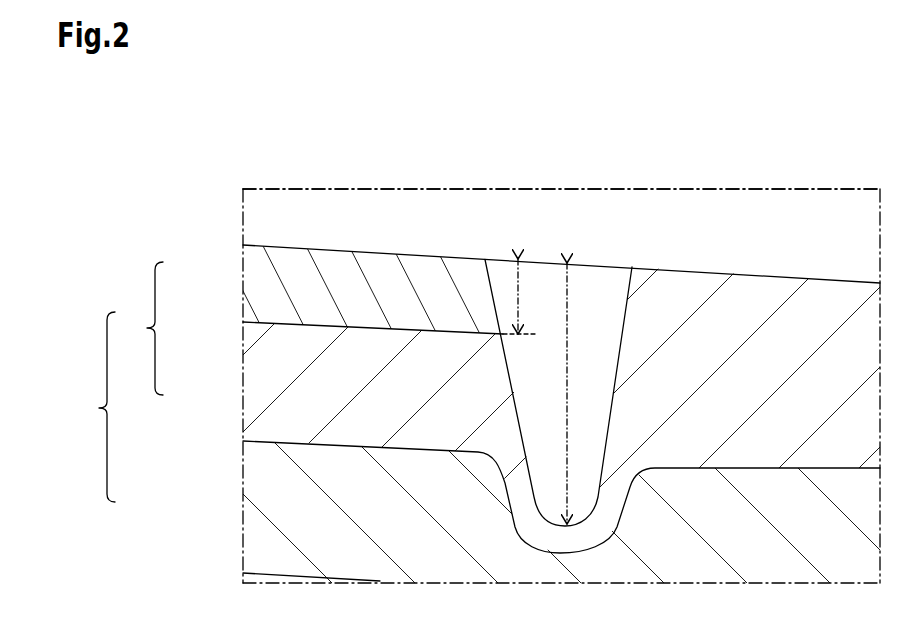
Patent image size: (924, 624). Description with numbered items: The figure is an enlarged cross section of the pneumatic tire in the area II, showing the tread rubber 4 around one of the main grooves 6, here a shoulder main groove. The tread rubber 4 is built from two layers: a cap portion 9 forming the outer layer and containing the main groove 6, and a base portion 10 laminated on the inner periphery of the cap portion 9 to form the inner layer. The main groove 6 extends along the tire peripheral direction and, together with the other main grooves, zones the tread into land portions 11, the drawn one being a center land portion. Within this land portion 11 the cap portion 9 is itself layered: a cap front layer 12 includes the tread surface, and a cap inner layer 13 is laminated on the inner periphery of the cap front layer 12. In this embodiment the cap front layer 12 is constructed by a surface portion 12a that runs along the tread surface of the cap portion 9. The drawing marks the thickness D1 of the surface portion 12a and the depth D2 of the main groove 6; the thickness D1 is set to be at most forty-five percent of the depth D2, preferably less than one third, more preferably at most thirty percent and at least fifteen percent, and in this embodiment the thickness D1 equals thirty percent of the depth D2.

The land portion 11 is at (310, 211).
The surface portion 12a is at (355, 245).
The cap front layer 12 is at (262, 277).
The cap inner layer 13 is at (262, 376).
The cap portion 9 is at (145, 328).
The tread rubber 4 is at (95, 407).
The base portion 10 is at (258, 482).
The main groove 6 is at (612, 279).
The area II is at (237, 558).
The thickness of the surface portion D1 is at (522, 293).
The depth of the main groove D2 is at (563, 458).